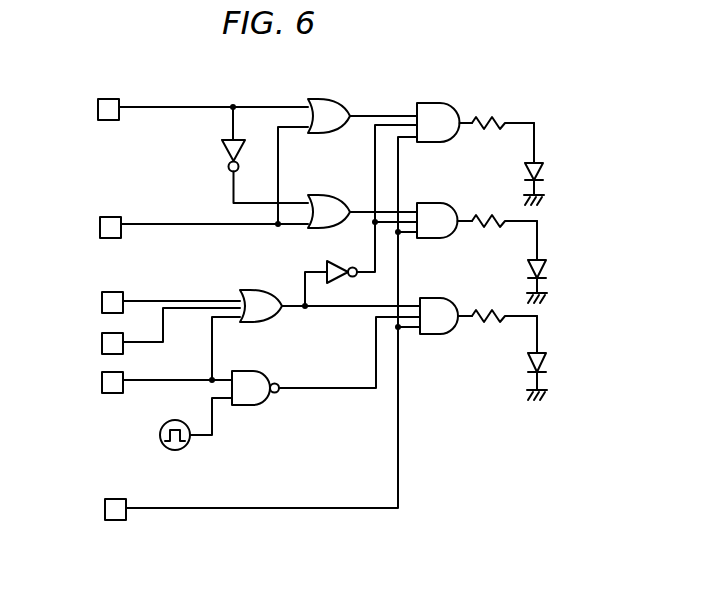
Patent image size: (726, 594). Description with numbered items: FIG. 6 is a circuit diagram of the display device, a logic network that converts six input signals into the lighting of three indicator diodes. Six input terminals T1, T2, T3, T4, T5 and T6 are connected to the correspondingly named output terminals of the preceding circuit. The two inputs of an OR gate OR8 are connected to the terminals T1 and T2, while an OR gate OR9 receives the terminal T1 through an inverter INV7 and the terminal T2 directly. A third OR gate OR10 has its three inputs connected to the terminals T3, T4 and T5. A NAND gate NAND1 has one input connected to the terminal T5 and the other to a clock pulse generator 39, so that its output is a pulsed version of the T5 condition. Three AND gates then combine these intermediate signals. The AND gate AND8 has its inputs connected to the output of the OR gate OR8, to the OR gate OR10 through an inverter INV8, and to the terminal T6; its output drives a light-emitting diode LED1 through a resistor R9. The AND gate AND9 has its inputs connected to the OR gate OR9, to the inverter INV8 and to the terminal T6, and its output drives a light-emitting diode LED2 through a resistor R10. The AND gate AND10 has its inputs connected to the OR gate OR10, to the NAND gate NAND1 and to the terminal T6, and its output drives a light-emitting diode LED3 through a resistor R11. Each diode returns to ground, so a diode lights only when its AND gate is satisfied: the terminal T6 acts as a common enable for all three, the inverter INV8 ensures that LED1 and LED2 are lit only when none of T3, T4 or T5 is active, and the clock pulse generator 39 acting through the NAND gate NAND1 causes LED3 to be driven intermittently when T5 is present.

The input terminal T1 is at (98, 108).
The input terminal T2 is at (100, 226).
The input terminal T3 is at (102, 302).
The input terminal T4 is at (102, 343).
The input terminal T5 is at (102, 382).
The input terminal T6 is at (105, 509).
The inverter INV7 is at (221, 150).
The inverter INV8 is at (338, 257).
The OR gate OR8 is at (324, 98).
The OR gate OR9 is at (322, 194).
The OR gate OR10 is at (251, 290).
The AND gate AND8 is at (429, 103).
The AND gate AND9 is at (429, 203).
The AND gate AND10 is at (432, 288).
The NAND gate NAND1 is at (245, 371).
The clock pulse generator 39 is at (175, 420).
The resistor R9 is at (503, 110).
The resistor R10 is at (504, 208).
The resistor R11 is at (504, 303).
The light-emitting diode LED1 is at (544, 171).
The light-emitting diode LED2 is at (547, 267).
The light-emitting diode LED3 is at (547, 360).